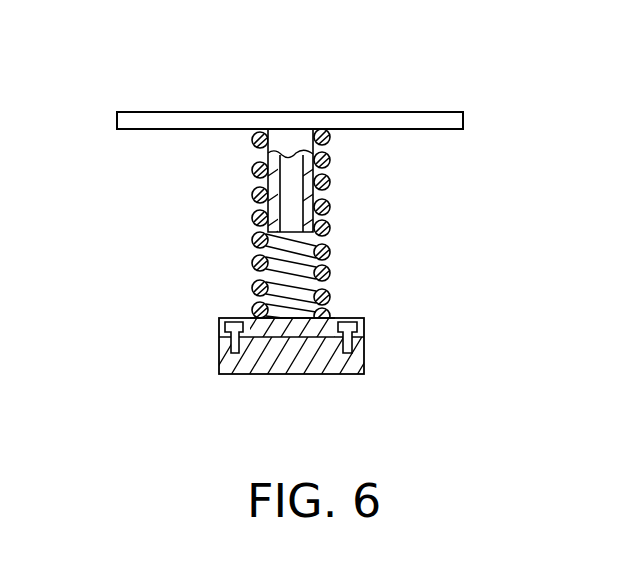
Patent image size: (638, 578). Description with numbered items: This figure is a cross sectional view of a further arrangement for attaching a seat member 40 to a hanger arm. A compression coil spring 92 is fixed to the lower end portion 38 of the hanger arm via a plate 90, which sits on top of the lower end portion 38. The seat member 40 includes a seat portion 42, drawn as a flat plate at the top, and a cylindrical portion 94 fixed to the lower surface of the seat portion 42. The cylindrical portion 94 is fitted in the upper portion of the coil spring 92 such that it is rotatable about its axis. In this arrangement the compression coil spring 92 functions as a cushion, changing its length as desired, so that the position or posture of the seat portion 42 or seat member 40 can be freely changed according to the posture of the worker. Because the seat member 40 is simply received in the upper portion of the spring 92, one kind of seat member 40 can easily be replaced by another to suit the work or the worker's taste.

The seat member 40 is at (152, 73).
The seat portion 42 is at (401, 120).
The cylindrical portion 94 is at (310, 172).
The compression coil spring 92 is at (255, 240).
The plate 90 is at (312, 314).
The lower end portion 38 is at (293, 380).